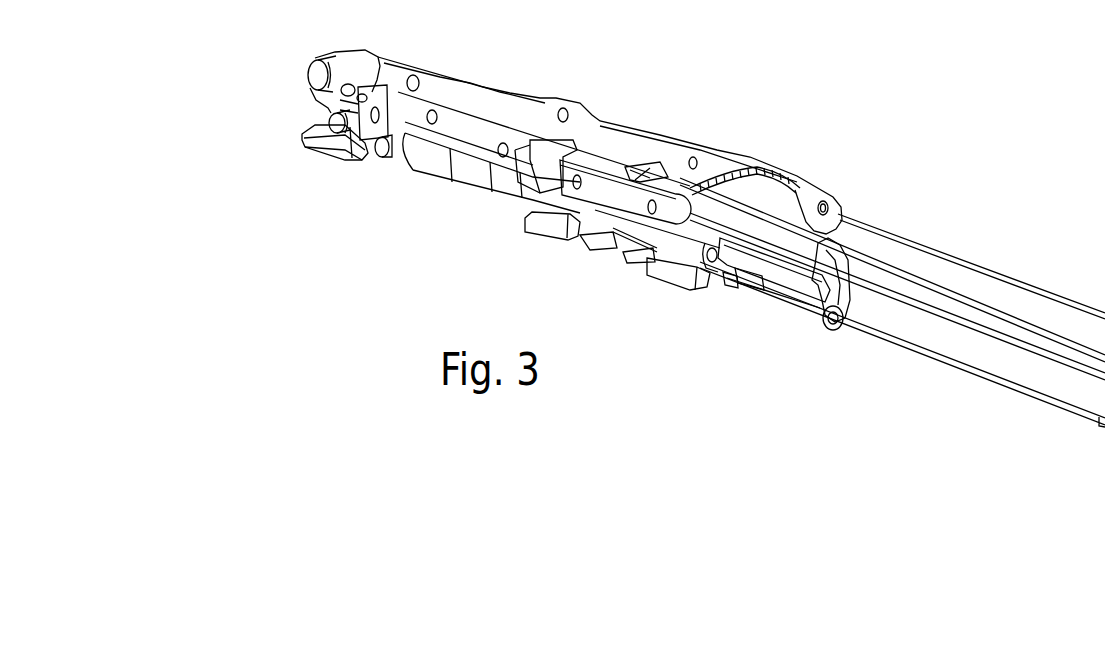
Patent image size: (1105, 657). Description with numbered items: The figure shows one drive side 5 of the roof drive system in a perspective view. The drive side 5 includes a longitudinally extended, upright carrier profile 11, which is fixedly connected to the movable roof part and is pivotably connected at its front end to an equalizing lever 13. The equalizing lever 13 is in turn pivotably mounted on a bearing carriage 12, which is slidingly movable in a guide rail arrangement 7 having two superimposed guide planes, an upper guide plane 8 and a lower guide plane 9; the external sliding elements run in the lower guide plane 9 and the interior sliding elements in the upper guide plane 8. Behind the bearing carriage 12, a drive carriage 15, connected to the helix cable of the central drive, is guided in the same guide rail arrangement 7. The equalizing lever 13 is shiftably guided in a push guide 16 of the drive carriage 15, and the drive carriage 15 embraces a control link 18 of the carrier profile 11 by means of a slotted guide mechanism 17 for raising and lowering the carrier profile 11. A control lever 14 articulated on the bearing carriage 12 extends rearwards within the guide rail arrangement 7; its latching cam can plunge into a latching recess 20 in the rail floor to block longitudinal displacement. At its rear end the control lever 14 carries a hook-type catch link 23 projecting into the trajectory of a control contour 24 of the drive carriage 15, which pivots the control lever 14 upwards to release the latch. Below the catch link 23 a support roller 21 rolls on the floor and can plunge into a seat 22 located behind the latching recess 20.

The drive side 5 is at (739, 91).
The guide rail arrangement 7 is at (983, 265).
The upper guide plane 8 is at (1047, 342).
The lower guide plane 9 is at (1012, 362).
The carrier profile 11 is at (627, 140).
The bearing carriage 12 is at (380, 158).
The equalizing lever 13 is at (467, 140).
The control lever 14 is at (780, 280).
The drive carriage 15 is at (628, 232).
The push guide 16 is at (563, 150).
The slotted guide mechanism 17 is at (661, 167).
The control link 18 is at (700, 182).
The latching recess 20 is at (723, 282).
The support roller 21 is at (838, 335).
The seat 22 is at (818, 313).
The catch link 23 is at (847, 243).
The control contour 24 is at (743, 287).